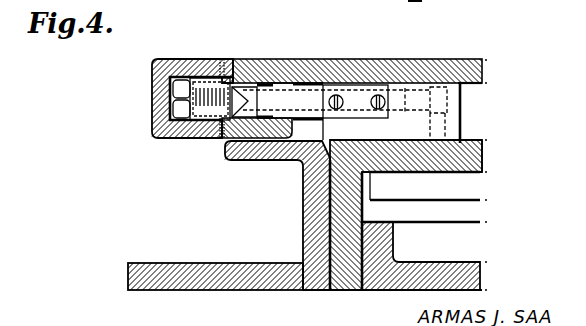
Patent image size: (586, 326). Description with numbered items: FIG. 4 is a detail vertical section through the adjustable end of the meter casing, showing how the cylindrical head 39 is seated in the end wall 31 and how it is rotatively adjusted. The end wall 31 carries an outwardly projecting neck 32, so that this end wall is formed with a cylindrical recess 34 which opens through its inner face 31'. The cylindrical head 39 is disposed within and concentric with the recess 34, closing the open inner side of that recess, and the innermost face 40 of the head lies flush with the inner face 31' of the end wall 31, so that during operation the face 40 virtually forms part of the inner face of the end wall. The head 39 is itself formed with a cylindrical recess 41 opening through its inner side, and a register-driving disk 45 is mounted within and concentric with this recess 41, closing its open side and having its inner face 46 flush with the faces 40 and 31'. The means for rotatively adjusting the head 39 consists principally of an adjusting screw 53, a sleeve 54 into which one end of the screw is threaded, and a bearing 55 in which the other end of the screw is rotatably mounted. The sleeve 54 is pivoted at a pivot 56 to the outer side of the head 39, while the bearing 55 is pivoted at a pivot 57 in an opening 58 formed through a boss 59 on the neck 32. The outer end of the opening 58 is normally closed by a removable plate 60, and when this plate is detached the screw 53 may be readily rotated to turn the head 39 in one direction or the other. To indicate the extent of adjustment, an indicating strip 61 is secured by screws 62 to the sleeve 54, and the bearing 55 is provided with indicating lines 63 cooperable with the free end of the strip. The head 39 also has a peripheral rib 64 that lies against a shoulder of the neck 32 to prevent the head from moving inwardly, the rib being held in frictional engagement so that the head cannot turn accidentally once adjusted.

The end wall 31 is at (215, 264).
The inner face of end wall 31' is at (308, 305).
The neck 32 is at (312, 208).
The cylindrical recess 34 is at (322, 245).
The cylindrical head 39 is at (470, 142).
The innermost face of head 40 is at (348, 292).
The cylindrical recess 41 is at (392, 222).
The register-driving disk 45 is at (452, 259).
The inner face of disk 46 is at (392, 291).
The adjusting screw 53 is at (312, 73).
The sleeve 54 is at (447, 126).
The bearing 55 is at (220, 141).
The pivot 56 is at (456, 89).
The pivot 57 is at (250, 163).
The opening 58 is at (285, 120).
The boss 59 is at (302, 125).
The removable plate 60 is at (152, 115).
The indicating strip 61 is at (252, 92).
The screws 62 is at (378, 95).
The indicating lines 63 is at (200, 82).
The peripheral rib 64 is at (372, 183).